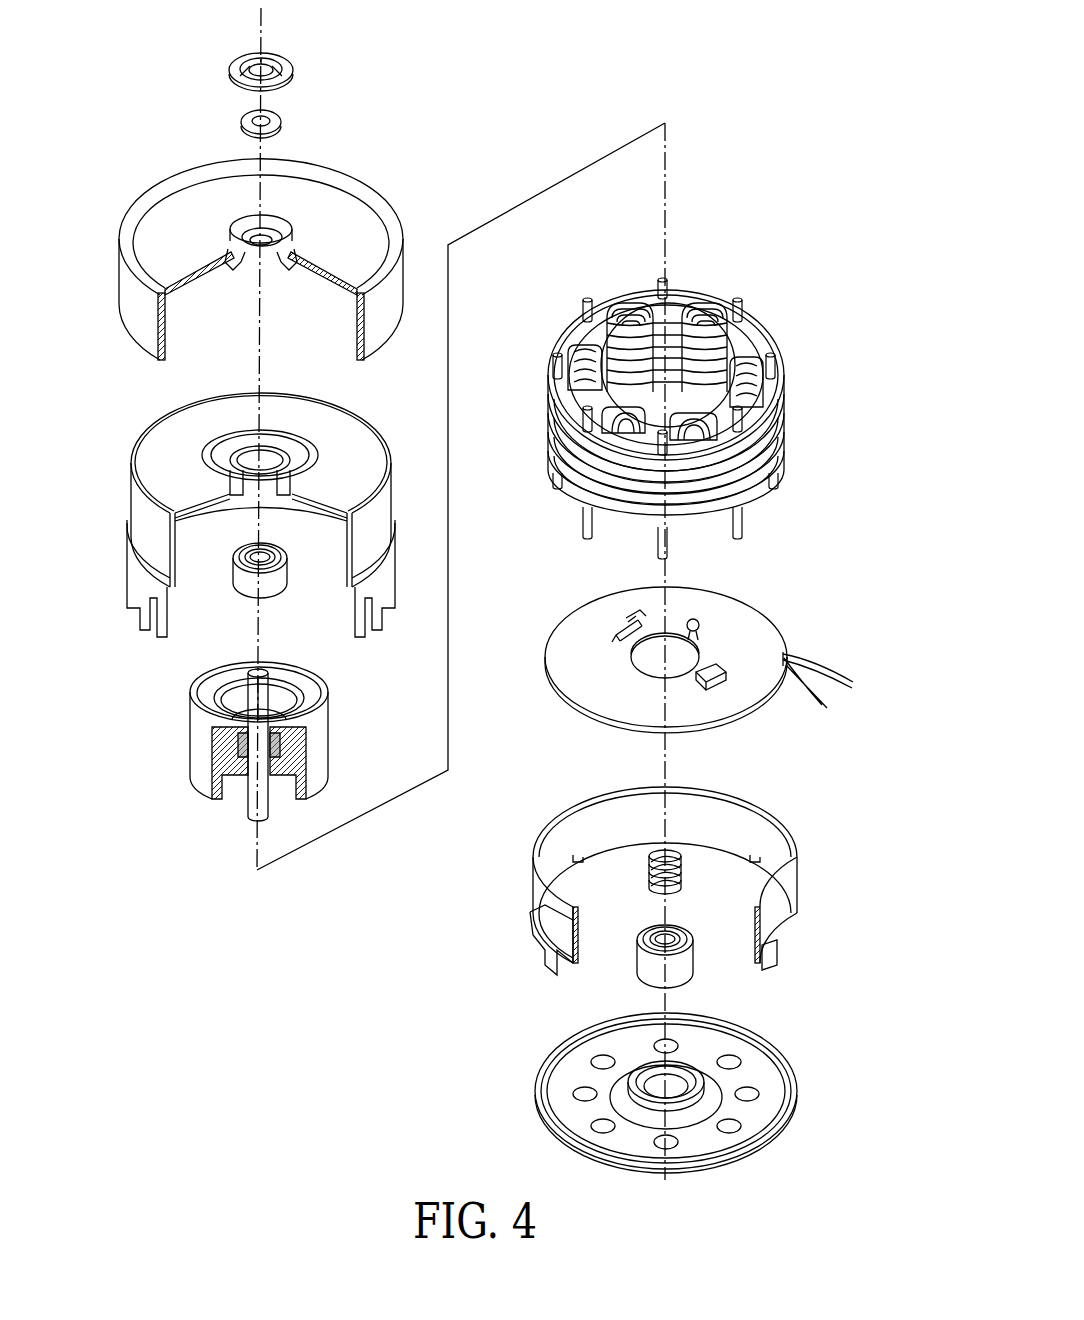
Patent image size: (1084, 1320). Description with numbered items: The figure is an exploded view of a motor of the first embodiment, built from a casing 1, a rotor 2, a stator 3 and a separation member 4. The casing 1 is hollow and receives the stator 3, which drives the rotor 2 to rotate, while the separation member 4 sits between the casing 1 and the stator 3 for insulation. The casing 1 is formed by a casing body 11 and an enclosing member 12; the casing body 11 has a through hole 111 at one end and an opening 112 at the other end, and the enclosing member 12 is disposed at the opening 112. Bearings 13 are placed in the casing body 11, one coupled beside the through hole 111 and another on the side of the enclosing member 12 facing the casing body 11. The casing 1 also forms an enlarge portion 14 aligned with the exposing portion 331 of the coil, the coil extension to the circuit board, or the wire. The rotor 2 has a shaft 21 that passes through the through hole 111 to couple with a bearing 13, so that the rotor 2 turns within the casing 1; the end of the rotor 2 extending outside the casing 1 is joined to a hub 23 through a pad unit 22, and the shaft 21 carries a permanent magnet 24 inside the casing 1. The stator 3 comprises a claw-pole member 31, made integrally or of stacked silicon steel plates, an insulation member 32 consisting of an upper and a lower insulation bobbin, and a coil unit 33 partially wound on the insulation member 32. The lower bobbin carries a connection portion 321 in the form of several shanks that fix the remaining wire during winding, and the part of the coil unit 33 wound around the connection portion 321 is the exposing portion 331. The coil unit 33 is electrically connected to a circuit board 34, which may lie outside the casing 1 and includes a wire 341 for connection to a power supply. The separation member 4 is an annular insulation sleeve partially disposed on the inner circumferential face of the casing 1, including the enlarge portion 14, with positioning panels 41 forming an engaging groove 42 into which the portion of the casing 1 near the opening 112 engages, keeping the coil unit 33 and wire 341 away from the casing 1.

The casing 1 is at (236, 525).
The casing body 11 is at (244, 528).
The through hole 111 is at (258, 447).
The opening 112 is at (348, 612).
The enclosing member 12 is at (796, 1083).
The bearing 13 is at (240, 580).
The enlarge portion 14 is at (132, 563).
The rotor 2 is at (220, 761).
The shaft 21 is at (249, 802).
The pad unit 22 is at (282, 62).
The hub 23 is at (352, 198).
The permanent magnet 24 is at (196, 752).
The stator 3 is at (726, 459).
The claw-pole member 31 is at (768, 457).
The insulation member 32 is at (768, 493).
The coil unit 33 is at (755, 358).
The exposing portion 331 is at (745, 525).
The connection portion 321 is at (743, 540).
The circuit board 34 is at (726, 660).
The wire 341 is at (835, 678).
The separation member 4 is at (691, 882).
The positioning panel 41 is at (772, 952).
The engaging groove 42 is at (766, 939).